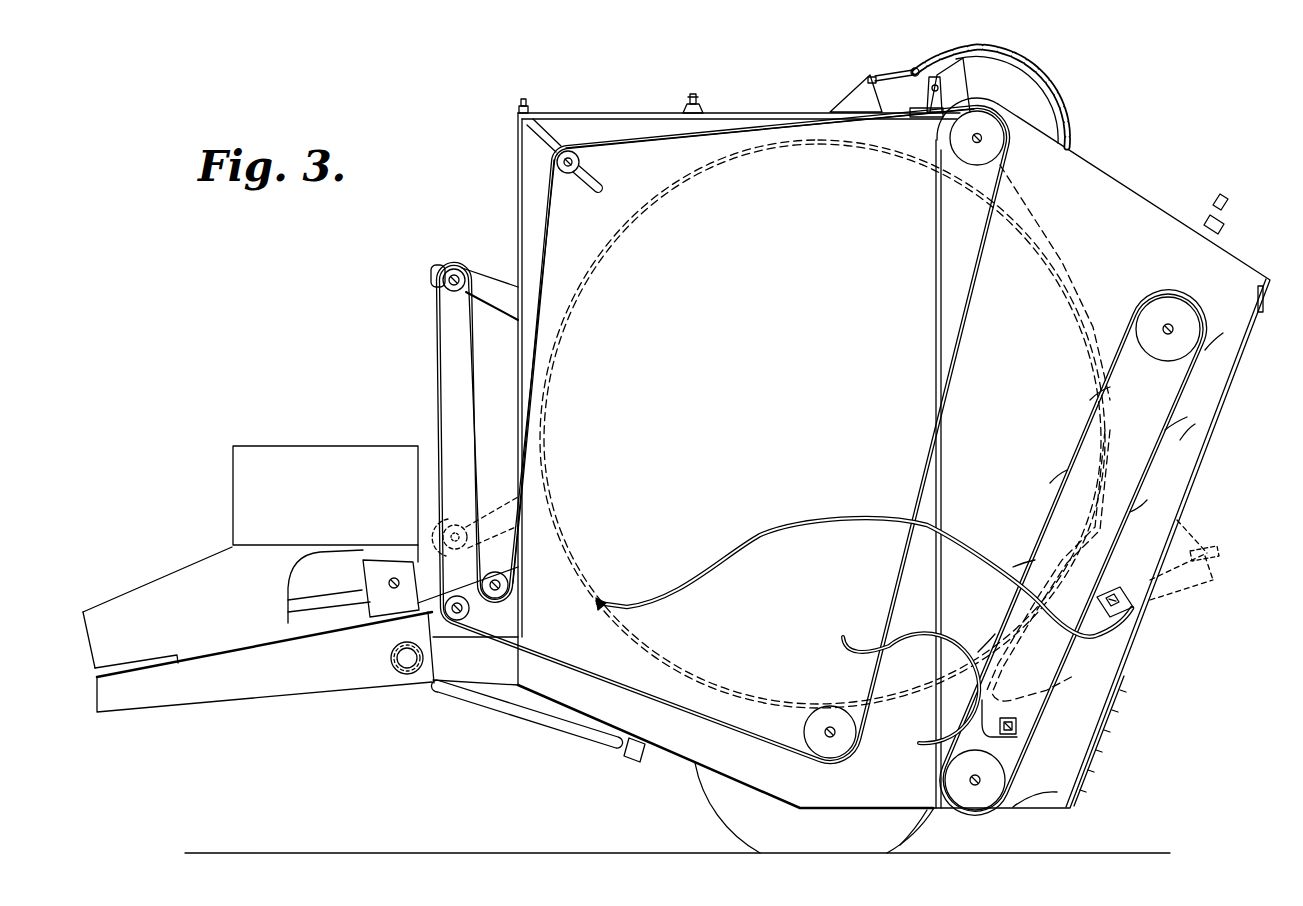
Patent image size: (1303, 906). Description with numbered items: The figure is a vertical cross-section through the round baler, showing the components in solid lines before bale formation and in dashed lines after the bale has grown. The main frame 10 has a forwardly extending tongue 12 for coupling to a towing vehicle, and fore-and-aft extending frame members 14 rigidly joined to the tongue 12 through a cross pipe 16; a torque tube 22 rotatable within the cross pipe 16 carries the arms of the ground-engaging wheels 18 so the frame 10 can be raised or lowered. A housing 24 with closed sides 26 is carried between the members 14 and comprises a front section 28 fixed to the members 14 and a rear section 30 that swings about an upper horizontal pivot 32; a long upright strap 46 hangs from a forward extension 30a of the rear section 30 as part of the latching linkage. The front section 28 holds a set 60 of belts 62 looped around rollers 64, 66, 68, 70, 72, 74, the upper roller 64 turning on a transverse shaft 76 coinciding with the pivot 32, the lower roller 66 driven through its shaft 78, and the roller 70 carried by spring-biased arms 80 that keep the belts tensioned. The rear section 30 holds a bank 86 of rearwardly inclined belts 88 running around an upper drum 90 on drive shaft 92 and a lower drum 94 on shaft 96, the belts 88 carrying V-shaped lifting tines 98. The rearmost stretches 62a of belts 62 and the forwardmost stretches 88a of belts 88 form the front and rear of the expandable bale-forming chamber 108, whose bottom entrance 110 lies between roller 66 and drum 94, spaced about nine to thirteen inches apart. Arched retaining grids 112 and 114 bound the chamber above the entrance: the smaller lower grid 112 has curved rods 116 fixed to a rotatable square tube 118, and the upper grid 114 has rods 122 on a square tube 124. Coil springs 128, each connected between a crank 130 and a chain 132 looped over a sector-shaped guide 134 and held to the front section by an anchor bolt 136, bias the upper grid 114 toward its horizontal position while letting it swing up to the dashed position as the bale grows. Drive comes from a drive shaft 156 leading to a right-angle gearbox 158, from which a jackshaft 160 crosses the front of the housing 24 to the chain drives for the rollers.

The main frame 10 is at (416, 698).
The tongue 12 is at (162, 697).
The fore-and-aft extending members 14 is at (503, 670).
The cross pipe 16 is at (392, 646).
The ground-engaging wheels 18 is at (717, 792).
The torque tube 22 is at (392, 661).
The housing 24 is at (740, 107).
The sides 26 is at (645, 115).
The front section 28 is at (500, 143).
The rear section 30 is at (1180, 209).
The forward extension 30a is at (950, 90).
The upper horizontal pivot 32 is at (996, 156).
The upright strap 46 is at (925, 88).
The set of flexible belt elements 60 is at (750, 124).
The flexible belt elements 62 is at (628, 145).
The rearmost stretches 62a is at (605, 262).
The upper roller 64 is at (980, 158).
The lower roller 66 is at (838, 750).
The roller 68 is at (470, 610).
The roller 70 is at (456, 268).
The roller 72 is at (515, 590).
The roller 74 is at (562, 174).
The transverse shaft 76 is at (985, 136).
The shaft 78 is at (832, 722).
The fore-and-aft extending arms 80 is at (487, 290).
The bank of endless flexible belt elements 86 is at (1202, 402).
The belt elements 88 is at (1143, 503).
The forwardmost stretches 88a is at (1097, 488).
The drum 90 is at (1160, 320).
The drive shaft 92 is at (1175, 330).
The drum 94 is at (972, 807).
The shaft 96 is at (980, 765).
The lifting tines 98 is at (1190, 434).
The bale-forming chamber 108 is at (895, 699).
The bottom entrance 110 is at (876, 792).
The lower retaining grid 112 is at (886, 630).
The upper retaining grid 114 is at (745, 525).
The curved rods 116 is at (943, 652).
The square tube 118 is at (1016, 734).
The curved rods 122 is at (858, 530).
The square tube 124 is at (1120, 590).
The coil springs 128 is at (1212, 540).
The crank 130 is at (1190, 600).
The chain 132 is at (1020, 60).
The sector-shaped guide 134 is at (1045, 103).
The anchor bolt 136 is at (880, 72).
The drive shaft 156 is at (307, 603).
The right-angle gearbox 158 is at (397, 567).
The jackshaft 160 is at (390, 582).